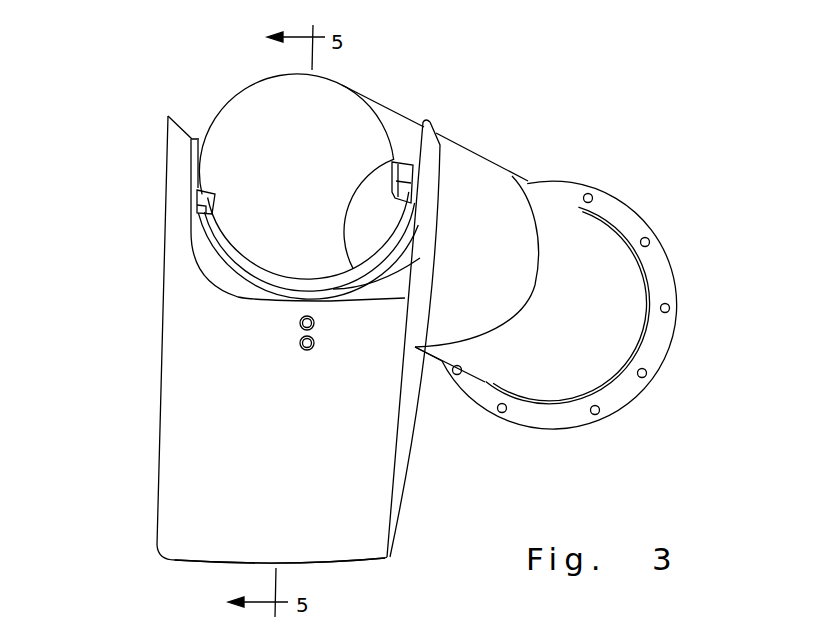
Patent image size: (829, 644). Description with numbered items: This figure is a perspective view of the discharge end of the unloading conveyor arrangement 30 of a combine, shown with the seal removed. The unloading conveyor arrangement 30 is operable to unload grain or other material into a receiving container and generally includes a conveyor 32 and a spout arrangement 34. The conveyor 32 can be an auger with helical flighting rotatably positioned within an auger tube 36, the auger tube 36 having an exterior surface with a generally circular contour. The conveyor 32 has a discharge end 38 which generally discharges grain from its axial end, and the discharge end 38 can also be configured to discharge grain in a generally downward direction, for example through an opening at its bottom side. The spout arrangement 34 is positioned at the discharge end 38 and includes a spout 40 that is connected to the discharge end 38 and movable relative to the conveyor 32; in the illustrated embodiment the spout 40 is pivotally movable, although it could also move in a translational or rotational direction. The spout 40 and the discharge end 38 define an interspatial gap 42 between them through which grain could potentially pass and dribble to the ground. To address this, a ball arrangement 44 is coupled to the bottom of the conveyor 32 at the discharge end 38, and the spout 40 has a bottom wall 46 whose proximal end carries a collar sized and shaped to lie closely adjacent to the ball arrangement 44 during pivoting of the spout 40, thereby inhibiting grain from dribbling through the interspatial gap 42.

The unloading conveyor arrangement 30 is at (548, 137).
The conveyor 32 is at (483, 158).
The spout arrangement 34 is at (157, 438).
The auger tube 36 is at (522, 178).
The discharge end 38 is at (240, 87).
The spout 40 is at (402, 497).
The interspatial gap 42 is at (230, 272).
The ball arrangement 44 is at (333, 289).
The bottom wall 46 is at (208, 528).